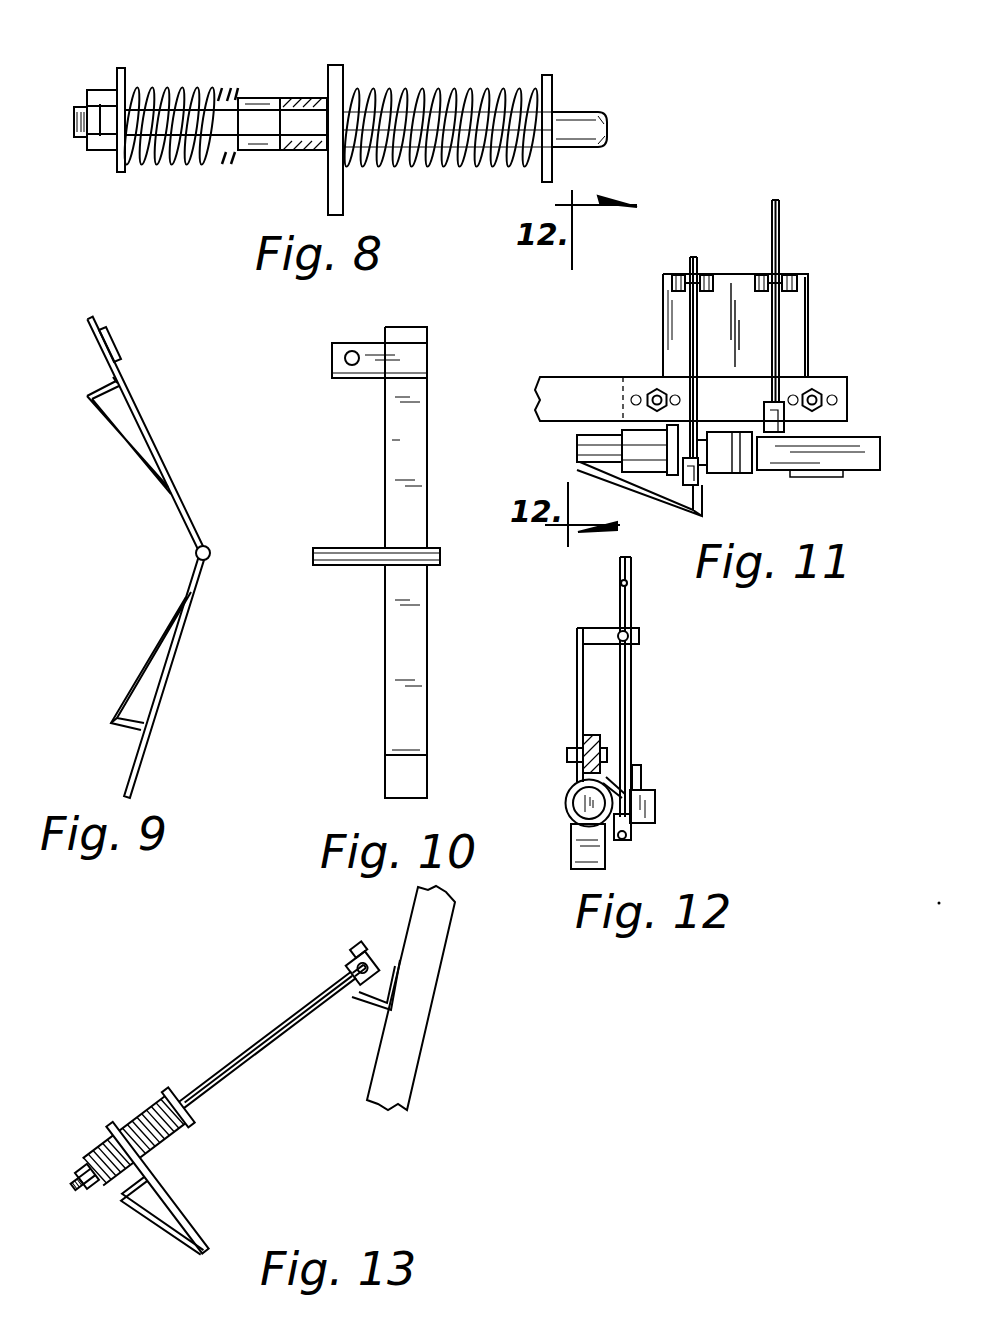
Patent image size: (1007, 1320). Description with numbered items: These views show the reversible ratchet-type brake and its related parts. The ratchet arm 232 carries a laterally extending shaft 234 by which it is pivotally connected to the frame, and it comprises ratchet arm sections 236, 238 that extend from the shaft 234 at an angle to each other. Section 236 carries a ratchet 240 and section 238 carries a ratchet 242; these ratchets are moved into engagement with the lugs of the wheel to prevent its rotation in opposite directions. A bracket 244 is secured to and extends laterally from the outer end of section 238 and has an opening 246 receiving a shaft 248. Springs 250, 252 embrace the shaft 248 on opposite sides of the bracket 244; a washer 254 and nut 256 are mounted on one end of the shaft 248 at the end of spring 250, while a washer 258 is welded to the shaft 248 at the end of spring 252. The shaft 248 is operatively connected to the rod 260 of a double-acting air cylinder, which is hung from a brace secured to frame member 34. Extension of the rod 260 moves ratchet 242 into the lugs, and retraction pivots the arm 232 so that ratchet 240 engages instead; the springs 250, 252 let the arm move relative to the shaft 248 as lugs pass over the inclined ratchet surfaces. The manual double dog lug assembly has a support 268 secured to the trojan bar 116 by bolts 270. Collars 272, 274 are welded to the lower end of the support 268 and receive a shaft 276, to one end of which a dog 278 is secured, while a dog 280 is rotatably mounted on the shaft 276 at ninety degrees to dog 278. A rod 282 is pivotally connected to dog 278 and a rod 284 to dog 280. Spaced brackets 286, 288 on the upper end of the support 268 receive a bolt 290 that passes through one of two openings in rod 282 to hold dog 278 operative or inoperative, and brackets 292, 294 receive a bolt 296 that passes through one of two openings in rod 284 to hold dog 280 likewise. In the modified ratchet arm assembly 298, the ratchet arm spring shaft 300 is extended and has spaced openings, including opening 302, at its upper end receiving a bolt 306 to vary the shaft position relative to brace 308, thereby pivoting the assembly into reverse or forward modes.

In FIG. 13, the frame member 34 is at (438, 947).
In FIG. 11, the trojan bar 116 is at (581, 386).
In FIG. 12, the trojan bar 116 is at (590, 741).
In FIG. 9, the reversible ratchet-type brake or arm 232 is at (143, 554).
In FIG. 10, the reversible ratchet-type brake or arm 232 is at (378, 550).
In FIG. 9, the shaft 234 is at (166, 571).
In FIG. 10, the shaft 234 is at (340, 566).
In FIG. 9, the ratchet arm section 236 is at (165, 694).
In FIG. 10, the ratchet arm section 236 is at (393, 681).
In FIG. 9, the ratchet arm section 238 is at (167, 466).
In FIG. 10, the ratchet arm section 238 is at (410, 501).
In FIG. 9, the ratchet 240 is at (133, 730).
In FIG. 9, the ratchet 242 is at (100, 388).
In FIG. 8, the bracket 244 is at (345, 72).
In FIG. 9, the bracket 244 is at (110, 345).
In FIG. 10, the bracket 244 is at (365, 343).
In FIG. 10, the opening 246 is at (345, 358).
In FIG. 8, the shaft 248 is at (226, 130).
In FIG. 8, the spring 250 is at (226, 92).
In FIG. 8, the spring 252 is at (471, 90).
In FIG. 8, the washer 254 is at (122, 76).
In FIG. 8, the nut 256 is at (104, 100).
In FIG. 8, the washer 258 is at (553, 82).
In FIG. 8, the rod 260 is at (601, 116).
In FIG. 9, the support 268 is at (133, 683).
In FIG. 11, the support 268 is at (672, 325).
In FIG. 12, the support 268 is at (578, 676).
In FIG. 9, the bolts 270 is at (122, 445).
In FIG. 11, the bolts 270 is at (827, 380).
In FIG. 11, the collar 272 is at (635, 441).
In FIG. 11, the collar 274 is at (738, 475).
In FIG. 11, the shaft 276 is at (578, 456).
In FIG. 12, the shaft 276 is at (580, 801).
In FIG. 11, the dog 278 is at (668, 500).
In FIG. 12, the dog 278 is at (580, 856).
In FIG. 11, the dog 280 is at (867, 471).
In FIG. 12, the dog 280 is at (656, 809).
In FIG. 11, the rod 282 is at (690, 342).
In FIG. 12, the rod 282 is at (633, 689).
In FIG. 11, the rod 284 is at (781, 322).
In FIG. 11, the bracket 286 is at (682, 275).
In FIG. 12, the bracket 286 is at (600, 636).
In FIG. 11, the bracket 288 is at (707, 275).
In FIG. 11, the bolt 290 is at (670, 282).
In FIG. 12, the bolt 290 is at (641, 636).
In FIG. 11, the bracket 292 is at (762, 275).
In FIG. 11, the bracket 294 is at (797, 276).
In FIG. 11, the bolt 296 is at (752, 283).
In FIG. 13, the modified ratchet arm assembly 298 is at (192, 1207).
In FIG. 13, the ratchet arm spring shaft 300 is at (283, 1028).
In FIG. 13, the opening 302 is at (328, 990).
In FIG. 13, the bolt 306 is at (362, 961).
In FIG. 13, the brace 308 is at (378, 1000).